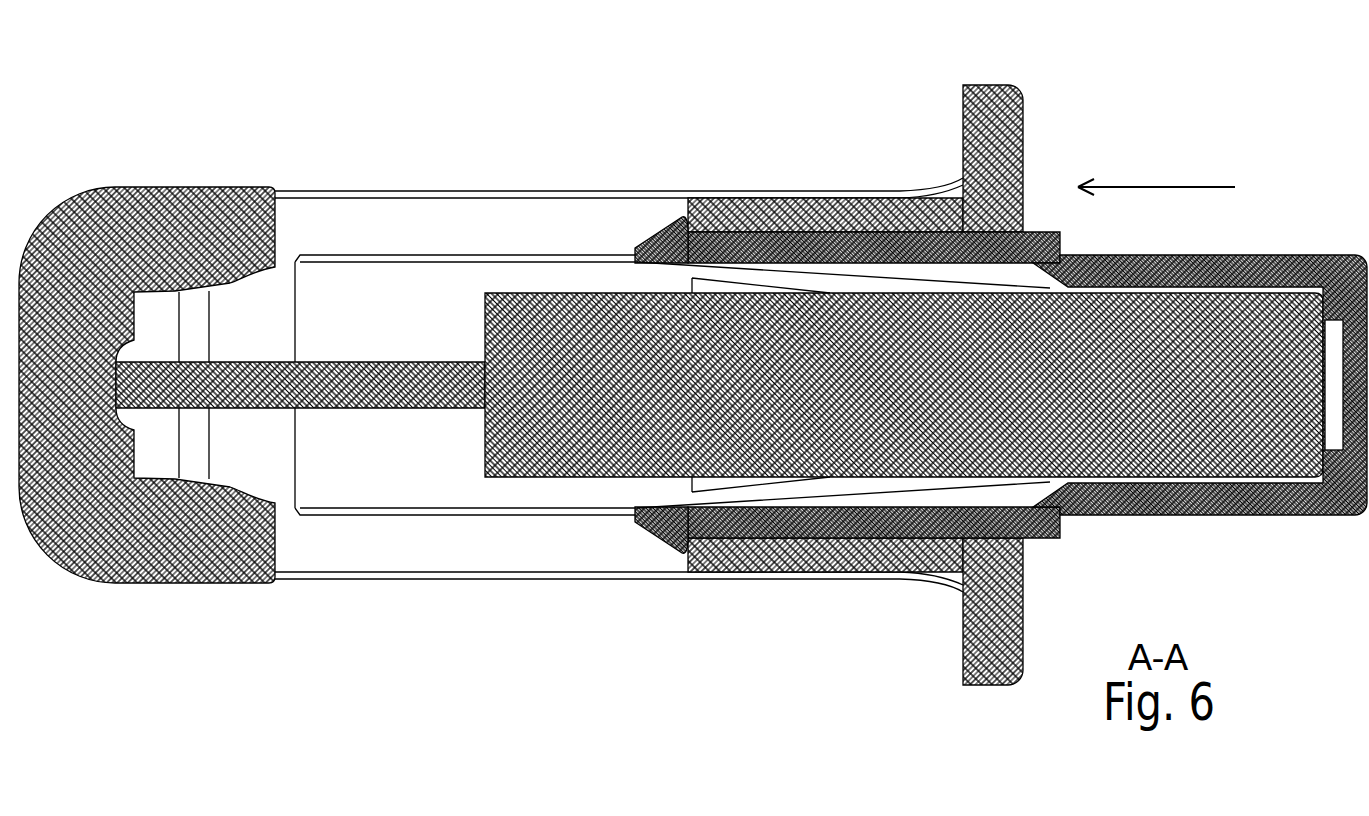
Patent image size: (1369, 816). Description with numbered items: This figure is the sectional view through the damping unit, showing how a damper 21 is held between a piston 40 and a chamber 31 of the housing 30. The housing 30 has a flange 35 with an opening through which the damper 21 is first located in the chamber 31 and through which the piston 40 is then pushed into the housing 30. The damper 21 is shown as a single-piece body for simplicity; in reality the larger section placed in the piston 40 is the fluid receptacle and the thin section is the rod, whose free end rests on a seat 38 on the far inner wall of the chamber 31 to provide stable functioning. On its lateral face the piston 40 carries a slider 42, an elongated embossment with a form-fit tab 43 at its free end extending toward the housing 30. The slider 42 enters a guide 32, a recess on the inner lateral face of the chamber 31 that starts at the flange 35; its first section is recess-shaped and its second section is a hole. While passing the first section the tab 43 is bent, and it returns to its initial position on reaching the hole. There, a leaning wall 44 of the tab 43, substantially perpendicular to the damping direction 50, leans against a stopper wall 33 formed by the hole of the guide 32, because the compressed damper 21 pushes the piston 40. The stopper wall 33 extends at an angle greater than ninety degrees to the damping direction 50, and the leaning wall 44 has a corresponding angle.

The damper 21 is at (1165, 412).
The housing 30 is at (128, 592).
The chamber 31 is at (252, 313).
The guide 32 is at (385, 217).
The stopper wall 33 is at (690, 207).
The flange 35 is at (1007, 125).
The seat 38 is at (116, 424).
The piston 40 is at (1275, 268).
The slider 42 is at (882, 245).
The form-fit tab 43 is at (655, 232).
The leaning wall 44 is at (688, 547).
The damping direction 50 is at (1173, 185).